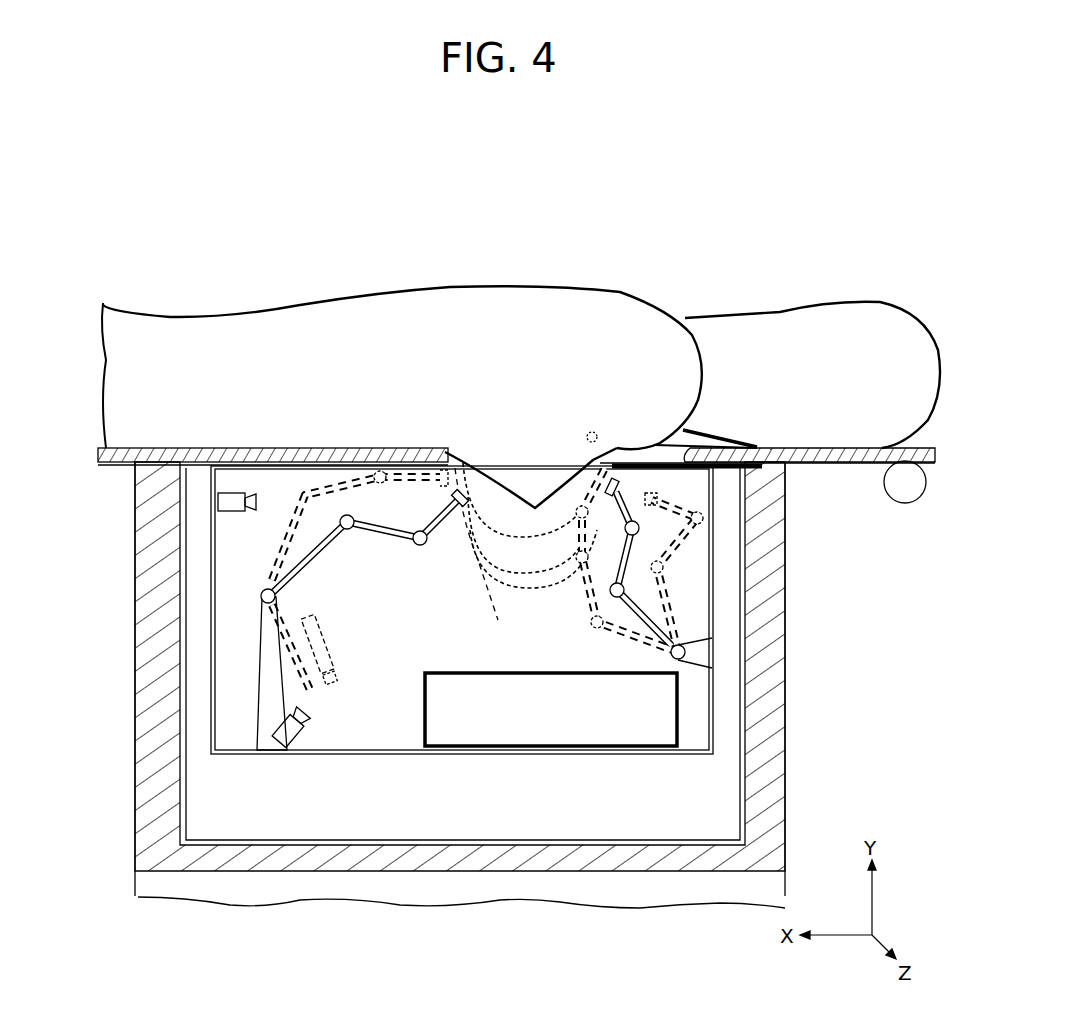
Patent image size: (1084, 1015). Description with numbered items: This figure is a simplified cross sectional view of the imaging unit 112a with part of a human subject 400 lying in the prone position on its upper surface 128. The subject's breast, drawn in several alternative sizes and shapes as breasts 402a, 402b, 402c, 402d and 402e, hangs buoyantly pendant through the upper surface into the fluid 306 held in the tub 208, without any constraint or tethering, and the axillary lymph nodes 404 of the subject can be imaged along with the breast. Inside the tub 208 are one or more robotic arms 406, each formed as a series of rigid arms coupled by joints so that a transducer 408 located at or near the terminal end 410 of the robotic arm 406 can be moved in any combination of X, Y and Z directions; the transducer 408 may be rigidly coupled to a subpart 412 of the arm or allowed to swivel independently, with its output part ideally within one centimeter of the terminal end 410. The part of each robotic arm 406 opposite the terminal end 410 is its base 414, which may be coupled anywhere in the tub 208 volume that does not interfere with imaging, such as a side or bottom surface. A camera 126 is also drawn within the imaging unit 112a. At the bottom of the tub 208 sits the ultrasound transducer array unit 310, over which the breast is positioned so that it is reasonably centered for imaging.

The human subject 400 is at (455, 285).
The breast 402a is at (505, 445).
The breast 402b is at (565, 490).
The breast 402c is at (478, 545).
The breast 402d is at (510, 565).
The breast 402e is at (580, 570).
The axillary lymph nodes 404 is at (632, 460).
The transducer 408 is at (437, 458).
The subpart of the robotic arm 412 is at (630, 497).
The fluid 306 is at (228, 447).
The upper surface 128 is at (283, 447).
The camera 126 is at (222, 500).
The terminal end 410 is at (450, 502).
The robotic arm 406 is at (248, 630).
The base 414 is at (270, 693).
The imaging unit 112a is at (830, 737).
The tub 208 is at (347, 717).
The ultrasound transducer array unit 310 is at (551, 709).